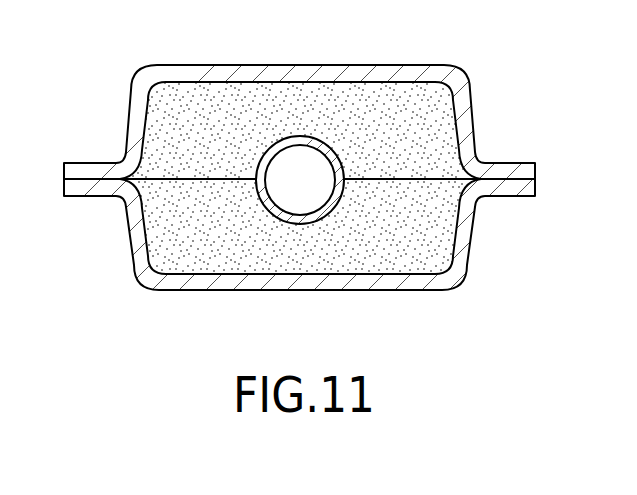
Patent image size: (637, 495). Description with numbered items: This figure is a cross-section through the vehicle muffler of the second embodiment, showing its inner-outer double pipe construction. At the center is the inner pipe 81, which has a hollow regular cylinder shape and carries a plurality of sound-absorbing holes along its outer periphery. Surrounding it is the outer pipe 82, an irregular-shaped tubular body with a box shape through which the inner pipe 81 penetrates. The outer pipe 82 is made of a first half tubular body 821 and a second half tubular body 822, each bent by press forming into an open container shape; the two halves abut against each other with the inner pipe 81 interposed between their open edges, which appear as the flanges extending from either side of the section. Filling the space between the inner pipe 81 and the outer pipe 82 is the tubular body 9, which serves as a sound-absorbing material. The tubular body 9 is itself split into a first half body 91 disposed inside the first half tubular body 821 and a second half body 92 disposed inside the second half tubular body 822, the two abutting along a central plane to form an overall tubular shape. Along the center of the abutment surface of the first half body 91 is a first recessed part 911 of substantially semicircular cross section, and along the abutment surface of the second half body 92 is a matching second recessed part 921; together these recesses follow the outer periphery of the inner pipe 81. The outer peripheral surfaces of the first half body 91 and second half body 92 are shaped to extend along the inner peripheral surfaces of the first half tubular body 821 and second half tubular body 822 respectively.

The tubular body 9 is at (175, 98).
The first half body 91 is at (215, 228).
The second half body 92 is at (233, 110).
The first recessed part 911 is at (333, 218).
The second recessed part 921 is at (295, 137).
The inner pipe 81 is at (263, 172).
The outer pipe 82 is at (470, 98).
The first half tubular body 821 is at (415, 282).
The second half tubular body 822 is at (375, 72).